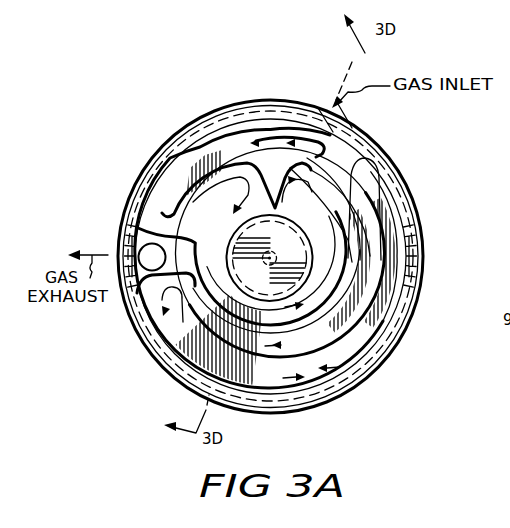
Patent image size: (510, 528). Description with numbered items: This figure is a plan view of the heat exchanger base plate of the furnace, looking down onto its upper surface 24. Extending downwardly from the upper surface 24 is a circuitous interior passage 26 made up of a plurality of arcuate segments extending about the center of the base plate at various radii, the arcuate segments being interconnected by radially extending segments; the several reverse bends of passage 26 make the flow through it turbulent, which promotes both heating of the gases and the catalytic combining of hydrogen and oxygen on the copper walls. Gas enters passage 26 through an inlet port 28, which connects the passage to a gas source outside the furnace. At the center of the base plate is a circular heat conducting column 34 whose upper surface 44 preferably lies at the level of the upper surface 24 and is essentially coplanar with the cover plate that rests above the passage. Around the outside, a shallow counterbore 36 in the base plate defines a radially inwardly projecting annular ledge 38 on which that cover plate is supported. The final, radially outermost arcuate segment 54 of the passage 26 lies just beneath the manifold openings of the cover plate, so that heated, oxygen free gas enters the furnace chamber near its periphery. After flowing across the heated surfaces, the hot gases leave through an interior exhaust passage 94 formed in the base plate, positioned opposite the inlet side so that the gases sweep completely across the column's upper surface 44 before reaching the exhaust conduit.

The upper surface of base plate 24 is at (408, 222).
The circuitous interior passage 26 is at (258, 138).
The inlet port 28 is at (335, 117).
The heat conducting column 34 is at (226, 245).
The shallow counterbore 36 is at (417, 283).
The annular ledge 38 is at (392, 197).
The upper surface of column 44 is at (250, 272).
The radially outermost arcuate segment 54 is at (390, 250).
The interior exhaust passage 94 is at (122, 245).